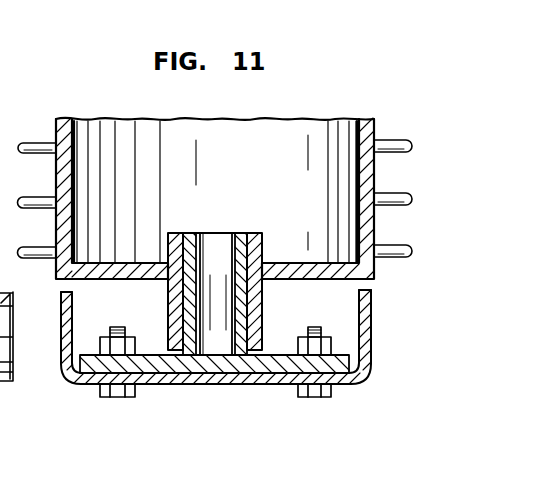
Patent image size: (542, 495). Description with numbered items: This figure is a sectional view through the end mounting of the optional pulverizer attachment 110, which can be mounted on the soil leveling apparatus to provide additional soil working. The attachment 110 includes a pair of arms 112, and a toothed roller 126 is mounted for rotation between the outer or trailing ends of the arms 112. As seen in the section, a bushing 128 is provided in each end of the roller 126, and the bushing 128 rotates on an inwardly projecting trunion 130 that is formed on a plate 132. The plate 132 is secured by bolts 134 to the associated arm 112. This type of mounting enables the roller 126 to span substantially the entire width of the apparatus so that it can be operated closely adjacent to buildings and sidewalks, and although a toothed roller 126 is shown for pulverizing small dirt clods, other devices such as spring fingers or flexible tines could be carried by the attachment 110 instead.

The pulverizer attachment 110 is at (306, 87).
The arm 112 is at (80, 386).
The toothed roller 126 is at (56, 119).
The bushing 128 is at (265, 242).
The trunion 130 is at (227, 241).
The plate 132 is at (186, 366).
The bolts 134 is at (127, 398).